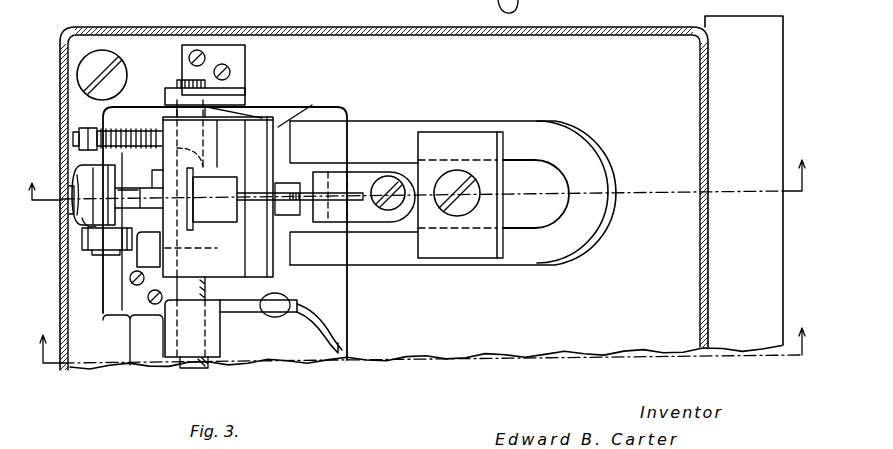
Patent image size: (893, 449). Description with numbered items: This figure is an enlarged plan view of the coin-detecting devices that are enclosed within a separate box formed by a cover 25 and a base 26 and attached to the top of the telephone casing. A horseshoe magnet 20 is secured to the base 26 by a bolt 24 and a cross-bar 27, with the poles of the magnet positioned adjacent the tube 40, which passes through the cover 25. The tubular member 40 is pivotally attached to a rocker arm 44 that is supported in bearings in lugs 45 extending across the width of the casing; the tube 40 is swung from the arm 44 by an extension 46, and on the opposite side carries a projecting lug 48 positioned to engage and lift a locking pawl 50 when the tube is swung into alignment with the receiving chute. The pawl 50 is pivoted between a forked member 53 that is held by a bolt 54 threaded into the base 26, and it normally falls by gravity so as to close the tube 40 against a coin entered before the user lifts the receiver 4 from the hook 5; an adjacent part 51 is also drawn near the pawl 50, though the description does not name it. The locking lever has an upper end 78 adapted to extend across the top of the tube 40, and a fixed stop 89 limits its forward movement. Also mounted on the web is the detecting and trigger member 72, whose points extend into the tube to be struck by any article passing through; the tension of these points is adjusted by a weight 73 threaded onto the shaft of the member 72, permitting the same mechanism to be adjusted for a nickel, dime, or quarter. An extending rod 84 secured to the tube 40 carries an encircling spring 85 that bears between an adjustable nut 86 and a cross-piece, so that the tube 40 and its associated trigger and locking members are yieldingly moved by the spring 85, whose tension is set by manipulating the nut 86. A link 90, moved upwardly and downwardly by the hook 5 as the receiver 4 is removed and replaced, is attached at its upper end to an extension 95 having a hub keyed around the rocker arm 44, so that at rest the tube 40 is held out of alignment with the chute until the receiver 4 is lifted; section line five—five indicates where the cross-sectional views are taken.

The horseshoe magnet 20 is at (580, 146).
The bolt 24 is at (452, 180).
The cover 25 is at (623, 24).
The base 26 is at (442, 47).
The cross-bar 27 is at (483, 140).
The tubular member 40 is at (312, 105).
The rocker arm 44 is at (197, 372).
The lugs 45 is at (233, 92).
The extension 46 is at (215, 137).
The projecting lug 48 is at (293, 187).
The locking pawl 50 is at (292, 214).
The upper plate 51 is at (280, 167).
The forked member 53 is at (365, 213).
The bolt 54 is at (388, 177).
The detecting and trigger member 72 is at (77, 211).
The weight 73 is at (82, 225).
The upper end of locking lever 78 is at (212, 199).
The extending rod 84 is at (78, 138).
The spring 85 is at (115, 125).
The adjustable nut 86 is at (95, 127).
The fixed stop 89 is at (145, 257).
The link 90 is at (340, 360).
The extension 95 is at (233, 312).
The receiver 4 is at (421, 334).
The hook 5 is at (418, 169).